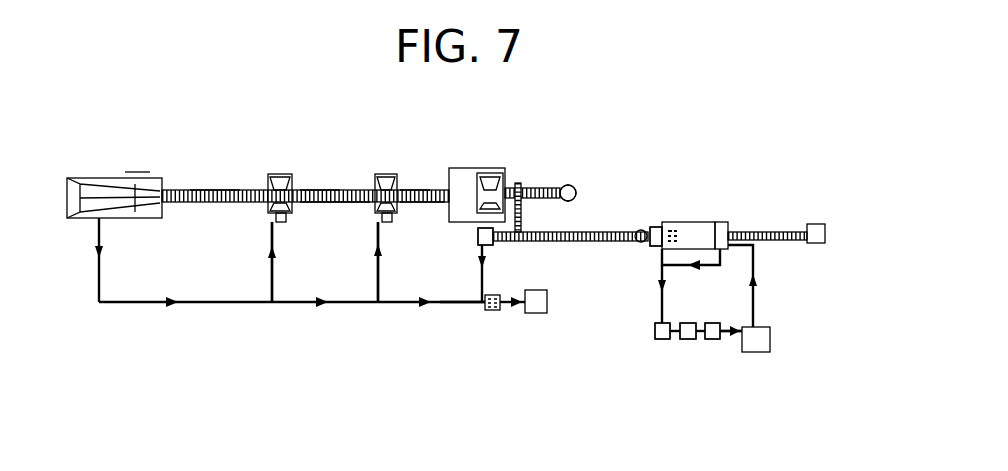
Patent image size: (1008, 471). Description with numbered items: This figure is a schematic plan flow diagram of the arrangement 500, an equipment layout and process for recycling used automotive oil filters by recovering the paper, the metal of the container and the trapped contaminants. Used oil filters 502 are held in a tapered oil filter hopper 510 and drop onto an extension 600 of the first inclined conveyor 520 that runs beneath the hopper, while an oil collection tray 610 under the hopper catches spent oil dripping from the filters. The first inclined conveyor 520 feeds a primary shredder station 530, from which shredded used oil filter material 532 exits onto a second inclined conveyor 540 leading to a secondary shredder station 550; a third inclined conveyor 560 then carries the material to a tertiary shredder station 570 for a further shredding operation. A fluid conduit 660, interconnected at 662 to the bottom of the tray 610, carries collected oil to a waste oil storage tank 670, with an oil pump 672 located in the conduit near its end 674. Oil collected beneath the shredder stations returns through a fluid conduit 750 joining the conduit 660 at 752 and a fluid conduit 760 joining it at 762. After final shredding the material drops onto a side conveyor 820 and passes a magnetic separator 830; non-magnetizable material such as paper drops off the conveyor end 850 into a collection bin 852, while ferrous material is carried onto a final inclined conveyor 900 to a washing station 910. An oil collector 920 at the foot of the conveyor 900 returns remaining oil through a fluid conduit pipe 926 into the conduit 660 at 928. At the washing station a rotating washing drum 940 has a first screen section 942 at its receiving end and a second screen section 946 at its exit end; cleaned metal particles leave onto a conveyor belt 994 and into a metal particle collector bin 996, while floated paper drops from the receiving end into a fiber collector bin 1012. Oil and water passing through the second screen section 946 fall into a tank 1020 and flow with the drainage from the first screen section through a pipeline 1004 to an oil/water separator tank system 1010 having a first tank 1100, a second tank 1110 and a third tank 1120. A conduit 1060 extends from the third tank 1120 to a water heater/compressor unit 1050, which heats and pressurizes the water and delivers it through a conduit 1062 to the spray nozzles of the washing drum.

The arrangement of equipment and process 500 is at (560, 96).
The used oil filters 502 is at (183, 195).
The oil filter hopper 510 is at (142, 178).
The first inclined conveyor 520 is at (213, 208).
The primary shredder station 530 is at (281, 166).
The shredded used oil filter material 532 is at (313, 192).
The second inclined conveyor 540 is at (331, 212).
The secondary shredder station 550 is at (388, 166).
The third inclined conveyor 560 is at (428, 212).
The tertiary shredder station 570 is at (481, 162).
The conveyor belt extension 600 is at (100, 195).
The oil collection tray 610 is at (145, 218).
The fluid conduit 660 is at (150, 307).
The conduit interconnection 662 is at (96, 228).
The waste oil storage tank 670 is at (538, 318).
The oil pump 672 is at (492, 312).
The conduit end 674 is at (456, 342).
The fluid conduit 750 is at (268, 250).
The conduit connection 752 is at (268, 306).
The fluid conduit 760 is at (375, 272).
The conduit connection 762 is at (386, 295).
The side conveyor 820 is at (527, 188).
The magnetic separator 830 is at (518, 178).
The conveyor end 850 is at (577, 193).
The collection bin 852 is at (580, 186).
The final inclined conveyor 900 is at (598, 228).
The washing station 910 is at (704, 180).
The oil collector 920 is at (470, 238).
The fluid conduit pipe 926 is at (490, 246).
The pipe connection 928 is at (458, 304).
The washing drum 940 is at (700, 222).
The first screen section 942 is at (655, 243).
The second screen section 946 is at (722, 225).
The conveyor belt 994 is at (785, 232).
The metal particle collector bin 996 is at (815, 224).
The pipeline 1004 is at (660, 283).
The oil/water separator tank system 1010 is at (695, 374).
The fiber collector bin 1012 is at (638, 226).
The tank 1020 is at (697, 283).
The water heater/compressor unit 1050 is at (776, 336).
The conduit 1060 is at (735, 334).
The conduit 1062 is at (758, 290).
The first tank 1100 is at (663, 347).
The second tank 1110 is at (690, 342).
The third tank 1120 is at (713, 350).